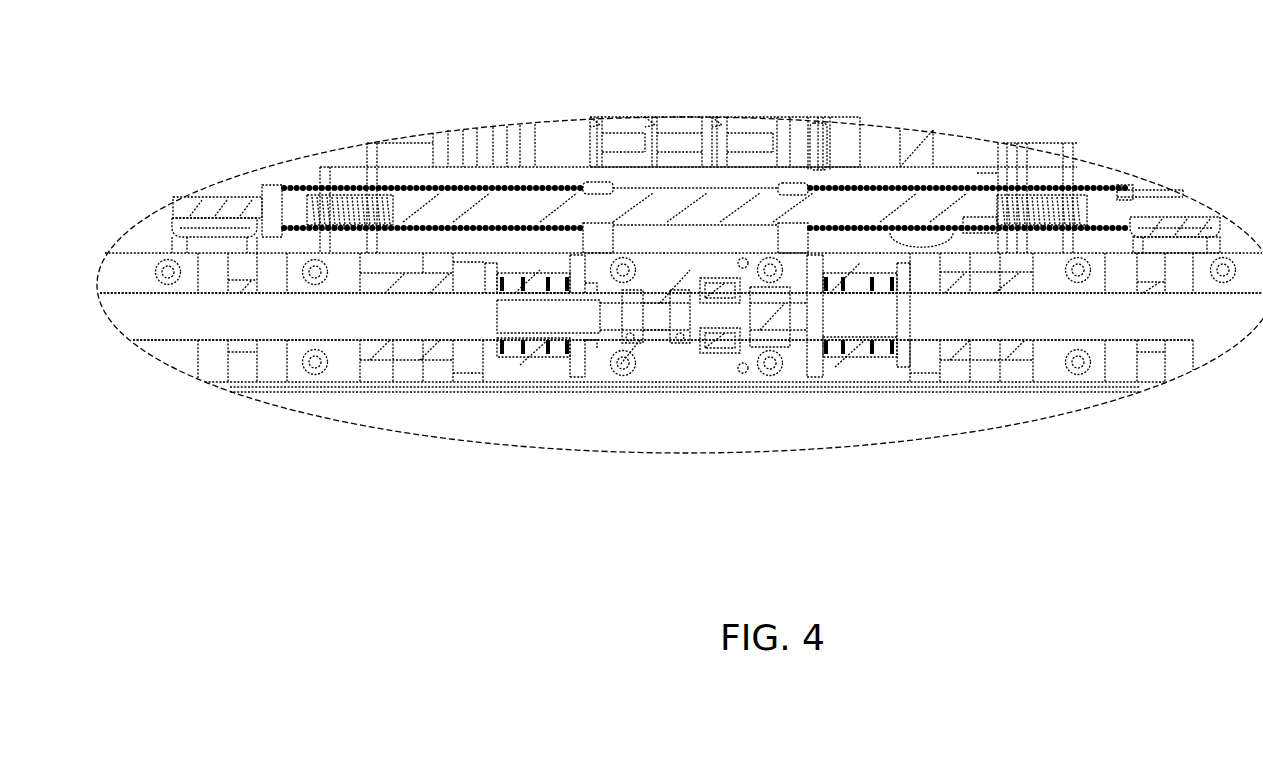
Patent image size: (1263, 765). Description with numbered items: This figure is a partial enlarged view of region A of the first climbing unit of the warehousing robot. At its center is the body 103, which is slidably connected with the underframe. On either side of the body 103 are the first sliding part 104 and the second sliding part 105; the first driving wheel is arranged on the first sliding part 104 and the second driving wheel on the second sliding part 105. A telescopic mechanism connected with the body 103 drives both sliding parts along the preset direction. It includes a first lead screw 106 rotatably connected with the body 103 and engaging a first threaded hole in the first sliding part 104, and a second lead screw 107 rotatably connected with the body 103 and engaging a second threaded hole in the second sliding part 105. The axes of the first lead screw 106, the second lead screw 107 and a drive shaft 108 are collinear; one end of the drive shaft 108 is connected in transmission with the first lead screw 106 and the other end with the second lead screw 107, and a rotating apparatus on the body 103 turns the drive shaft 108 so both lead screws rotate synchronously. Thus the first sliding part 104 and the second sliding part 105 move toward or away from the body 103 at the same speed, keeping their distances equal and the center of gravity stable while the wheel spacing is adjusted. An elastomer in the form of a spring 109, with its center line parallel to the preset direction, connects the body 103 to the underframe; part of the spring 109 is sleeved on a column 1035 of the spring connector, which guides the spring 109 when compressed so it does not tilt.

The body 103 is at (640, 358).
The first sliding part 104 is at (125, 265).
The second sliding part 105 is at (1090, 262).
The first lead screw 106 is at (220, 322).
The second lead screw 107 is at (1198, 323).
The drive shaft 108 is at (705, 315).
The spring 109 is at (396, 190).
The column 1035 is at (517, 210).
The partial enlarged region A is at (952, 430).